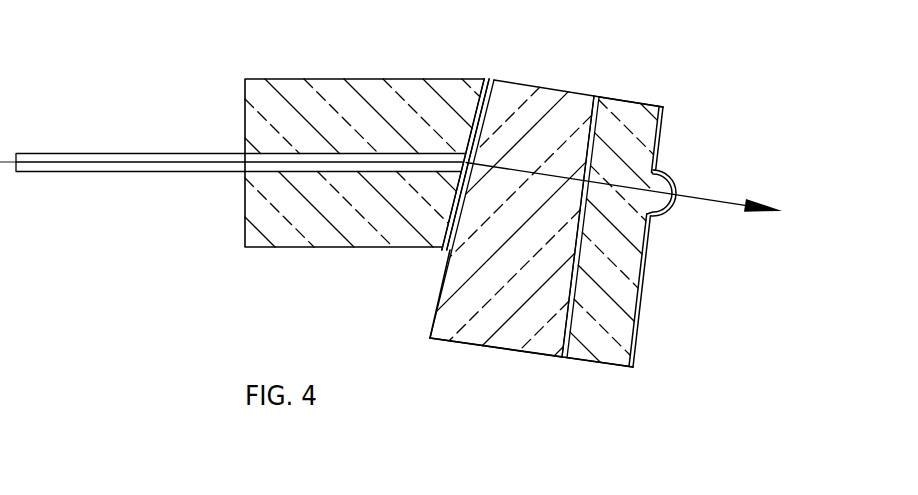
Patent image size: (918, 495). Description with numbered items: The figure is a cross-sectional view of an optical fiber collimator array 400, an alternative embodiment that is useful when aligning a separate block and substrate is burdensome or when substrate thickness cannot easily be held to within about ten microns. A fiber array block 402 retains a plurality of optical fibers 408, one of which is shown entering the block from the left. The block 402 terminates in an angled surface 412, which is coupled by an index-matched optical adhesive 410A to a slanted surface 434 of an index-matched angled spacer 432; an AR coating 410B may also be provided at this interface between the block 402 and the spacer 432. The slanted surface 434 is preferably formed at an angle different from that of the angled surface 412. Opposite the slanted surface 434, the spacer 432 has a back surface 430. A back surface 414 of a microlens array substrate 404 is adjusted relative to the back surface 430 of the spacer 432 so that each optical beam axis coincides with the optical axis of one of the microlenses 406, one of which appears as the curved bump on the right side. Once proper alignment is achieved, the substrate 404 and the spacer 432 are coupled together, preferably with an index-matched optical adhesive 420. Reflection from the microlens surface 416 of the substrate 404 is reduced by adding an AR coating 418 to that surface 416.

The optical fiber collimator array 400 is at (167, 88).
The fiber array block 402 is at (278, 77).
The microlens array substrate 404 is at (647, 105).
The microlens 406 is at (681, 229).
The optical fiber 408 is at (122, 172).
The index-matched optical adhesive 410A is at (470, 80).
The AR coating 410B is at (498, 81).
The angled surface 412 is at (460, 236).
The back surface 414 is at (556, 284).
The microlens surface 416 is at (660, 281).
The AR coating 418 is at (665, 107).
The index-matched optical adhesive 420 is at (589, 126).
The back surface 430 is at (590, 259).
The index-matched angled spacer 432 is at (492, 347).
The slanted surface 434 is at (434, 320).